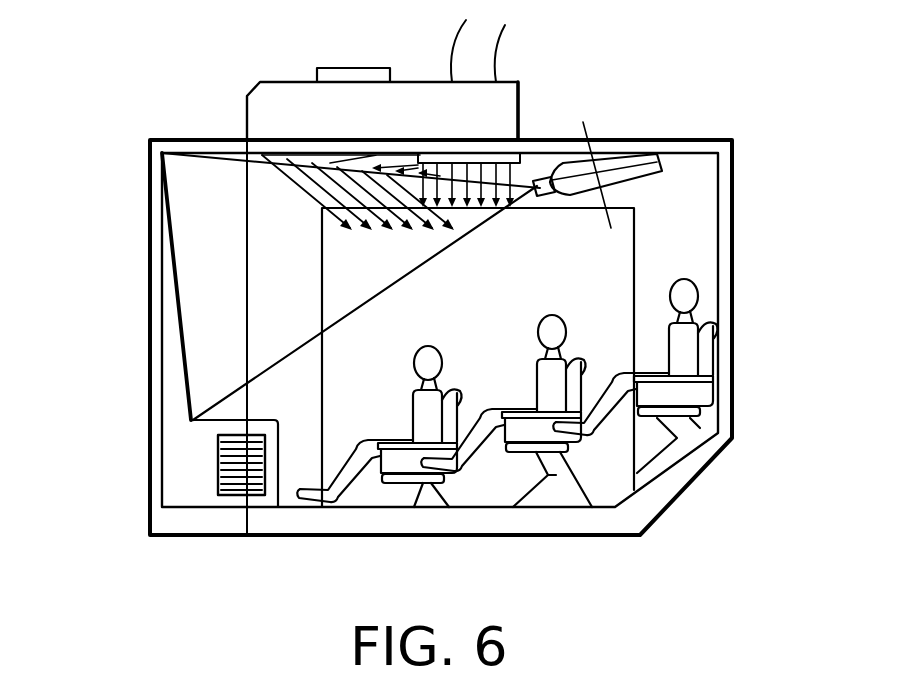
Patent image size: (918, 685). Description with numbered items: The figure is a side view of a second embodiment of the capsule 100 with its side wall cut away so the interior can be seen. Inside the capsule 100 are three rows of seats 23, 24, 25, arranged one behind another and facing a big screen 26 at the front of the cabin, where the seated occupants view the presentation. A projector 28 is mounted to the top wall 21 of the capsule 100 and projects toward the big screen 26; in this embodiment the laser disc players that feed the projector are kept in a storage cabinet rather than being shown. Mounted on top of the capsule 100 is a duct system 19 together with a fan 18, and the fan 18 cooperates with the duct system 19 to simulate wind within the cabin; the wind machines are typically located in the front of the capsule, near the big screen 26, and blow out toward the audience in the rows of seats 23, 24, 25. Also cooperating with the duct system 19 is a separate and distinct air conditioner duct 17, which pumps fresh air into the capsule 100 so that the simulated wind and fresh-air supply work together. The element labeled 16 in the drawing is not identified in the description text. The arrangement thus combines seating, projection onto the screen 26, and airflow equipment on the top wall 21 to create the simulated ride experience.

The capsule 100 is at (132, 152).
The equipment cabinet 16 is at (198, 493).
The air conditioner duct 17 is at (512, 27).
The fan 18 is at (341, 58).
The duct system 19 is at (267, 103).
The top wall 21 is at (735, 146).
The first row of seats 23 is at (427, 502).
The second row of seats 24 is at (555, 481).
The third row of seats 25 is at (683, 438).
The big screen 26 is at (183, 346).
The projector 28 is at (648, 155).